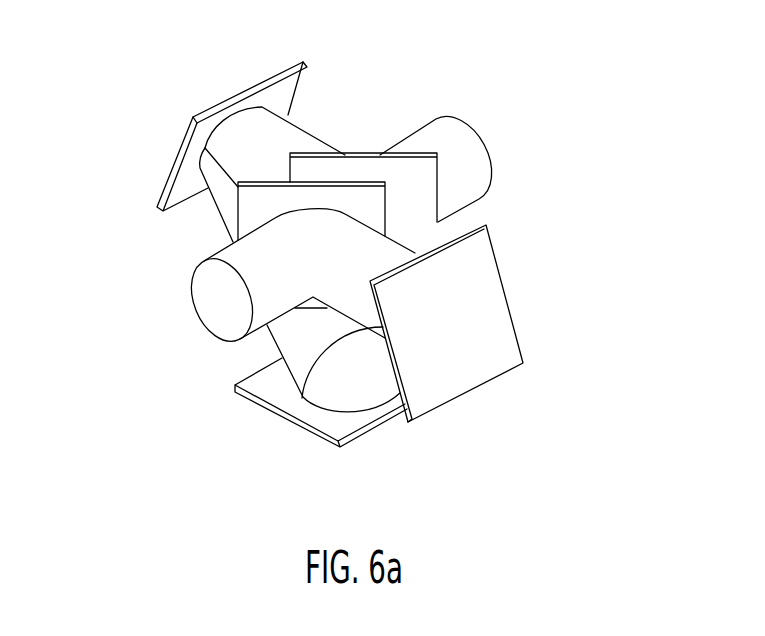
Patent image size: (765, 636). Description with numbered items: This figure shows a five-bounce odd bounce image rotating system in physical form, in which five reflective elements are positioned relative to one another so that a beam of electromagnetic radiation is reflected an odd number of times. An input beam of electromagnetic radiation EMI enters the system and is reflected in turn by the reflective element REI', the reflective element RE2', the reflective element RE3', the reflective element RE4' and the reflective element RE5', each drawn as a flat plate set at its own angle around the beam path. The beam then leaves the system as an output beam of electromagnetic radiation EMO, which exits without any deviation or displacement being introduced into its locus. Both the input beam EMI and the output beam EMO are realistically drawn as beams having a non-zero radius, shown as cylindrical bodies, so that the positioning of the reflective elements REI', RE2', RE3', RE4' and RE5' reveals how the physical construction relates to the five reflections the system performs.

The reflective element RE2' is at (208, 110).
The reflective element REI' is at (379, 123).
The input beam of electromagnetic radiation EMI is at (458, 155).
The reflective element RE5' is at (201, 183).
The output beam of electromagnetic radiation EMO is at (223, 298).
The reflective element RE3' is at (284, 429).
The reflective element RE4' is at (482, 342).